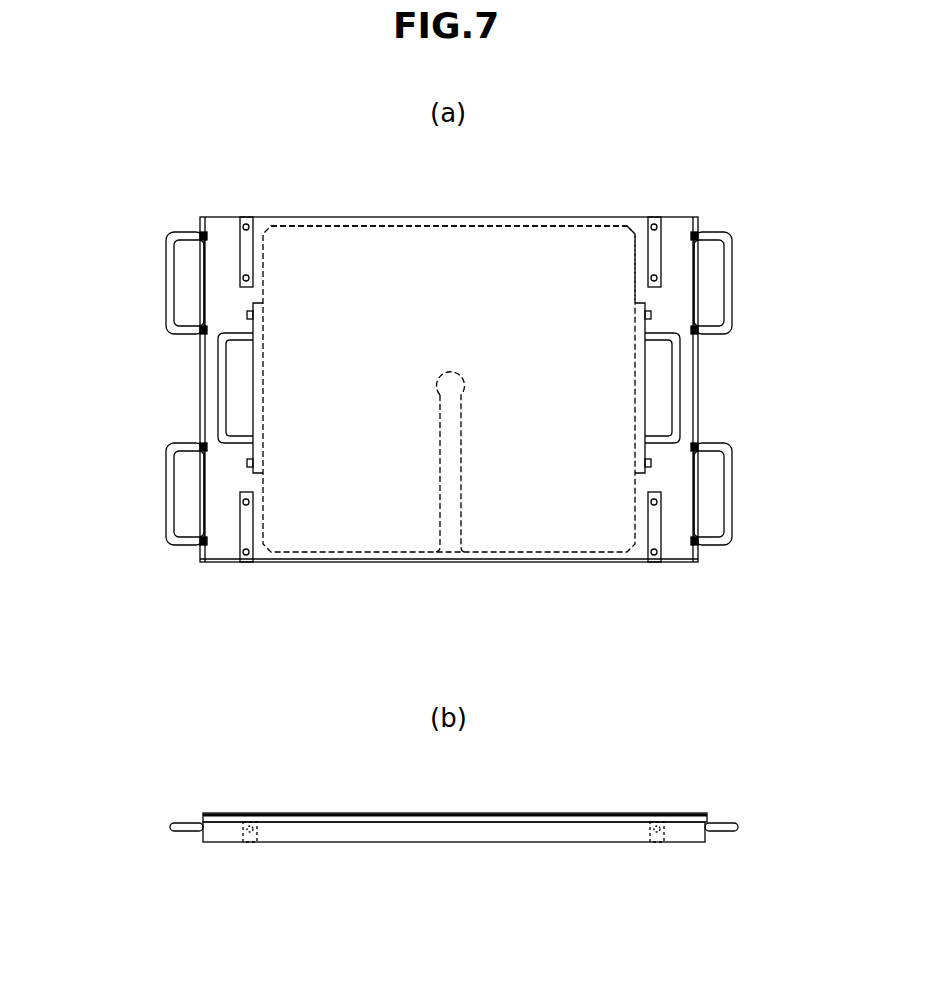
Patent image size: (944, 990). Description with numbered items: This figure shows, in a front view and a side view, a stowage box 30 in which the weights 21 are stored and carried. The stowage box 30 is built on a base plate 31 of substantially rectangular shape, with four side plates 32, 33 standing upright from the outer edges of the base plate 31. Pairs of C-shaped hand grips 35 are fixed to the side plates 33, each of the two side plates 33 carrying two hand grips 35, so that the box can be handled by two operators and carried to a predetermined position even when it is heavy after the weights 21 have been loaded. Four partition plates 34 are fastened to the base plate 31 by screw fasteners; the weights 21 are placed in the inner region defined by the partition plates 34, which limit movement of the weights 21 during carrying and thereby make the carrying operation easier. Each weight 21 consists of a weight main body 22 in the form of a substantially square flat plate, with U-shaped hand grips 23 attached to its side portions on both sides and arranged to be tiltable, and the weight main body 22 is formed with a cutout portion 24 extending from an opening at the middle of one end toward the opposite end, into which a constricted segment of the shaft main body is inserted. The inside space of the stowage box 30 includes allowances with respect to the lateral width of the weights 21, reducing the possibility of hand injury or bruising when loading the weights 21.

The weight 21 is at (642, 217).
The weight main body 22 is at (410, 530).
The hand grip 23 is at (220, 372).
The cutout portion 24 is at (463, 461).
The stowage box 30 is at (618, 566).
The base plate 31 is at (693, 470).
The side plate 32 is at (545, 217).
The side plate 33 is at (200, 412).
The partition plate 34 is at (246, 230).
The hand grip 35 is at (165, 277).